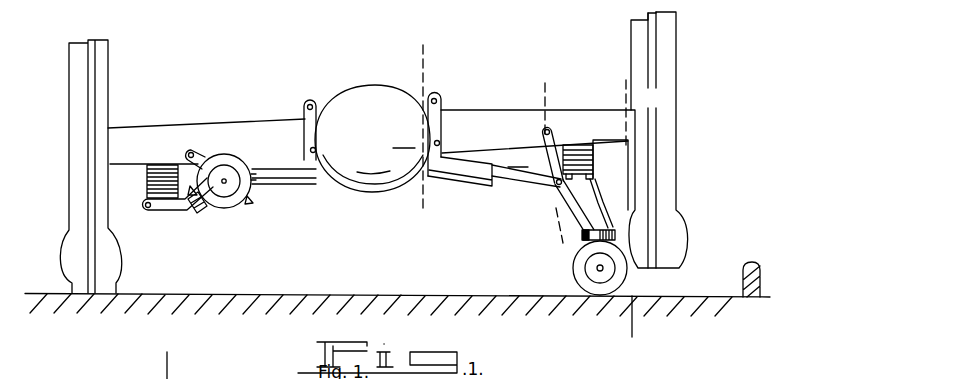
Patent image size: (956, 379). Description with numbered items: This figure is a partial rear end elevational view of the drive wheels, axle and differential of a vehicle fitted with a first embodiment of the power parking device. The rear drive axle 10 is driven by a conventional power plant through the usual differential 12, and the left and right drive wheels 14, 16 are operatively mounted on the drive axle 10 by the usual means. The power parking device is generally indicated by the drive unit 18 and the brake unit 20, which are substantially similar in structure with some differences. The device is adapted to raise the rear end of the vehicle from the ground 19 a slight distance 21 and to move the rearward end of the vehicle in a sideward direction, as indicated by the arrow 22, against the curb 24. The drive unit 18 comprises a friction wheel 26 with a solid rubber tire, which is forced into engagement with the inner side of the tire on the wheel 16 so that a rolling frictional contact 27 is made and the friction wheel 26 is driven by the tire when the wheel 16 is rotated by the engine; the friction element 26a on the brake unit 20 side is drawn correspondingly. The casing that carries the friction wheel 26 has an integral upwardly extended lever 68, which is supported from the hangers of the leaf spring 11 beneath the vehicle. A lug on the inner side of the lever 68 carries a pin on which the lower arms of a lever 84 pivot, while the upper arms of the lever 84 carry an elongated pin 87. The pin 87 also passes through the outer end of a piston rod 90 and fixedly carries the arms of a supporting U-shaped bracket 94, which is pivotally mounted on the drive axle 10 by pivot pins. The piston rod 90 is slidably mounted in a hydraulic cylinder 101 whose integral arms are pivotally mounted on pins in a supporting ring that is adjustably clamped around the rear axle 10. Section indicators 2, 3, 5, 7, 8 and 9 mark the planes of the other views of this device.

The direction of movement arrow (view direction) 2 is at (727, 287).
The section line 3 is at (147, 361).
The section line 5 is at (437, 58).
The section line 7 is at (405, 160).
The section line 8 is at (560, 93).
The section line 9 is at (608, 97).
The rear drive axle 10 is at (485, 111).
The leaf spring 11 is at (583, 150).
The differential 12 is at (377, 99).
The left drive wheel 14 is at (115, 257).
The right drive wheel 16 is at (680, 231).
The drive unit 18 is at (570, 273).
The ground 19 is at (706, 291).
The brake unit 20 is at (240, 207).
The slight distance 21 is at (665, 281).
The arrow 22 is at (310, 278).
The curb 24 is at (755, 263).
The friction wheel 26 is at (614, 226).
The actuating rod 26a is at (202, 212).
The rolling frictional contact 27 is at (617, 231).
The lever 68 is at (595, 188).
The lever 84 is at (572, 210).
The pin 87 is at (556, 185).
The piston rod 90 is at (520, 183).
The supporting U-shaped bracket 94 is at (551, 131).
The hydraulic cylinder 101 is at (452, 164).